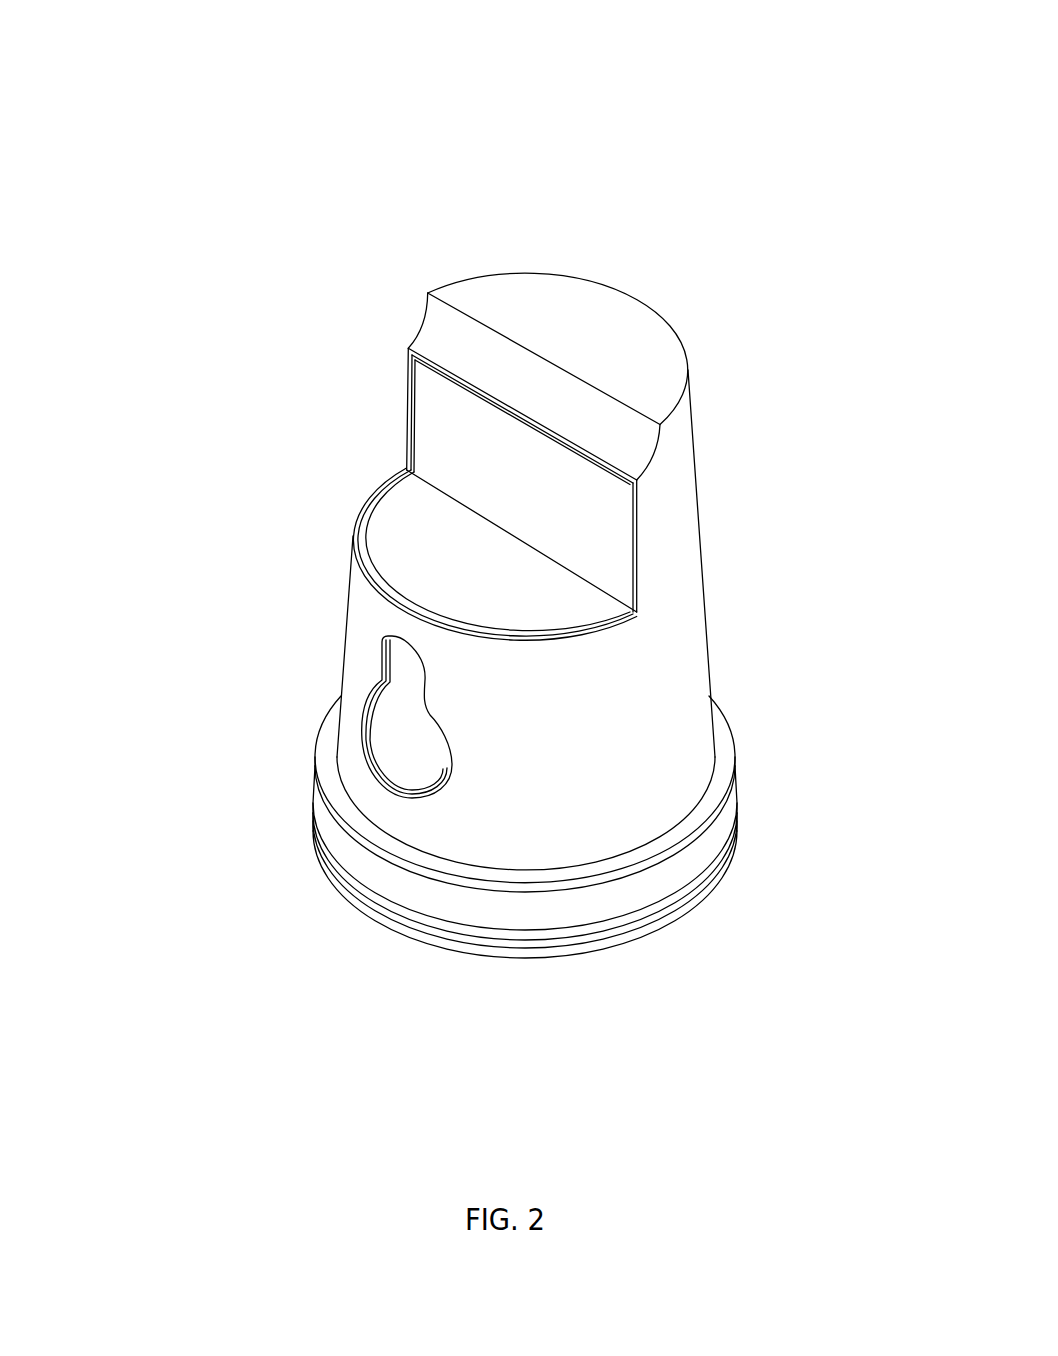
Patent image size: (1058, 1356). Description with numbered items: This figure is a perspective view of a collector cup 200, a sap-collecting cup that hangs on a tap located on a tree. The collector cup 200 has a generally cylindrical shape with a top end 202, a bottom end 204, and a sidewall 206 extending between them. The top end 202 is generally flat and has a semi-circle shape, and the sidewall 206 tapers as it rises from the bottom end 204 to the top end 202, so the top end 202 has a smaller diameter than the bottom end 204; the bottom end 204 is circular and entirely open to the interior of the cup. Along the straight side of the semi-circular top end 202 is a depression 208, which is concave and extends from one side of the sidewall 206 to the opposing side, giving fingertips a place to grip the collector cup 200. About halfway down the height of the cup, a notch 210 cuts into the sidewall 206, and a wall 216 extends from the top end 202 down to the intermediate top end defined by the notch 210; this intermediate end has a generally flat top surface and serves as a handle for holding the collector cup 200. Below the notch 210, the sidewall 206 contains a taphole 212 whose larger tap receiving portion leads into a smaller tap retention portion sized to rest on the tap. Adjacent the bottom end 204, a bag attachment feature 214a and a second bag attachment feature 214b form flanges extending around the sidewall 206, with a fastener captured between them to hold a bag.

The collector cup 200 is at (152, 66).
The top end 202 is at (585, 335).
The bottom end 204 is at (605, 948).
The sidewall 206 is at (668, 645).
The depression 208 is at (450, 333).
The notch 210 is at (440, 548).
The taphole 212 is at (420, 752).
The bag attachment feature 214a is at (360, 845).
The second bag attachment feature 214b is at (385, 925).
The wall 216 is at (592, 528).